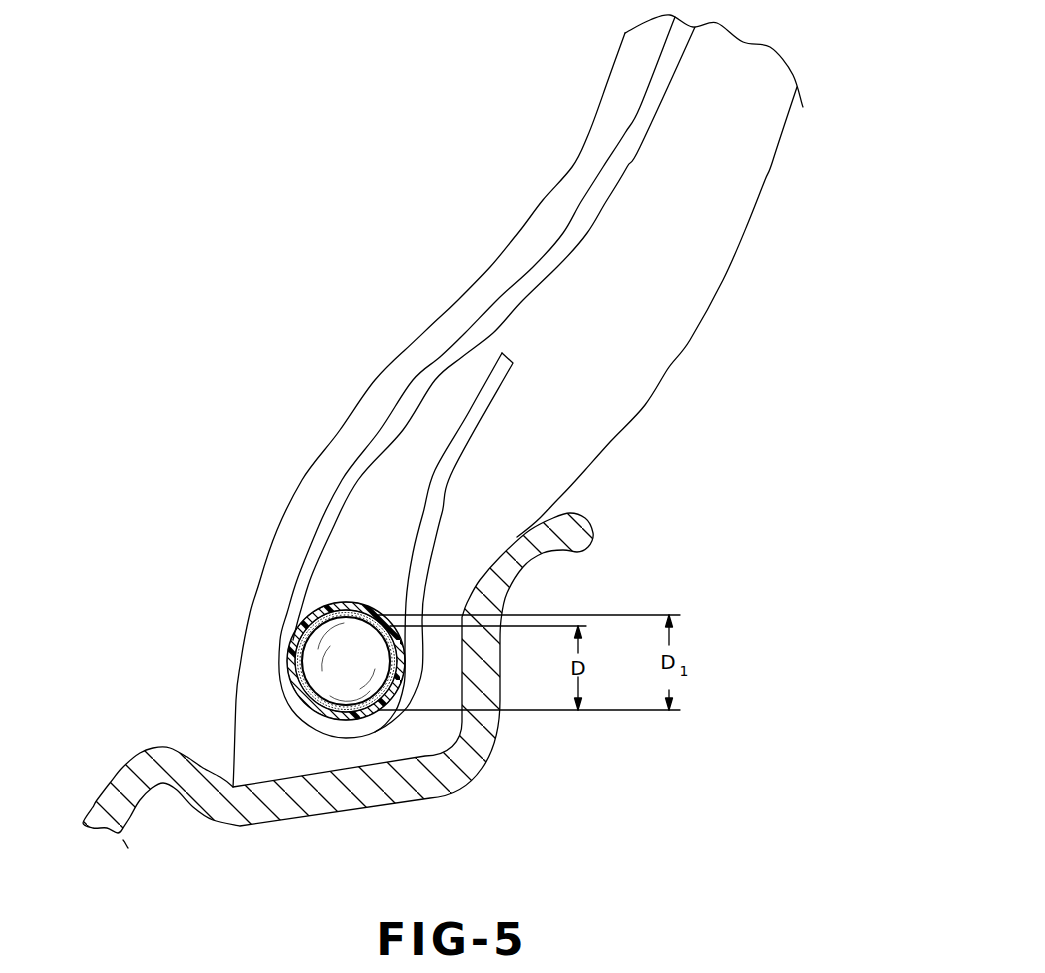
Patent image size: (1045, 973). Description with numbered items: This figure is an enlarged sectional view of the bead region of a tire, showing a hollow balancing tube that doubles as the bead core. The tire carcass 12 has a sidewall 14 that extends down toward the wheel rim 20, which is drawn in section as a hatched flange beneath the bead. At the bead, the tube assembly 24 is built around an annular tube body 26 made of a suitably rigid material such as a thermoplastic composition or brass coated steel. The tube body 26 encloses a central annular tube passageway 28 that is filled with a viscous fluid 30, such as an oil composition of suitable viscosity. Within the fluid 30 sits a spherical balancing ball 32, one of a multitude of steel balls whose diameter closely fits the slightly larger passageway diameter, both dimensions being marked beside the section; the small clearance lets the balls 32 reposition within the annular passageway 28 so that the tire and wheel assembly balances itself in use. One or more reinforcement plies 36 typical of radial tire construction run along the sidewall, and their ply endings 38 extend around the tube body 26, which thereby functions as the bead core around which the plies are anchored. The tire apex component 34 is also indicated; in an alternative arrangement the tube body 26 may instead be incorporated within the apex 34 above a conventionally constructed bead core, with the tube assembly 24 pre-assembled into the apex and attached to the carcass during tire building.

The tire carcass 12 is at (750, 232).
The sidewall 14 is at (745, 147).
The wheel rim 20 is at (417, 778).
The tube assembly 24 is at (350, 596).
The tube body 26 is at (337, 675).
The tube passageway 28 is at (312, 633).
The viscous fluid 30 is at (343, 620).
The spherical balancing ball 32 is at (311, 708).
The tire apex component 34 is at (403, 468).
The reinforcement ply 36 is at (577, 225).
The ply endings 38 is at (503, 368).